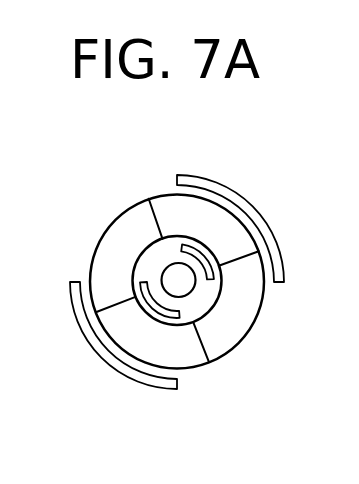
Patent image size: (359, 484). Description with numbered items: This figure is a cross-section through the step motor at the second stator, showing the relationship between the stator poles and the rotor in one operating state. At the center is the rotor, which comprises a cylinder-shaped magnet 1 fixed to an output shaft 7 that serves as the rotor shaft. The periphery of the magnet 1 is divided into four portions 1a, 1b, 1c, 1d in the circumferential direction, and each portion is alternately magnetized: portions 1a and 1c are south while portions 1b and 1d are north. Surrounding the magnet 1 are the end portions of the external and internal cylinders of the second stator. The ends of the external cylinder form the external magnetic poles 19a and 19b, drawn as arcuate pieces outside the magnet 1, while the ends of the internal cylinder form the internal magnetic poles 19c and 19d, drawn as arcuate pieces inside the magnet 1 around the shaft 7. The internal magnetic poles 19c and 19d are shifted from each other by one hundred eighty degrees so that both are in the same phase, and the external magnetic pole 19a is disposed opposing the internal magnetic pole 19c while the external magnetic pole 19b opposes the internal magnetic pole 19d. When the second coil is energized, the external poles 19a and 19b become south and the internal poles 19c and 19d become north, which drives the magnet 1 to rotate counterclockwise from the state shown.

The magnet 1 is at (224, 282).
The magnet portion 1a is at (160, 203).
The magnet portion 1b is at (107, 240).
The magnet portion 1c is at (193, 357).
The magnet portion 1d is at (257, 292).
The output shaft 7 is at (163, 274).
The external magnetic pole 19a is at (250, 205).
The external magnetic pole 19b is at (102, 360).
The internal magnetic pole 19c is at (182, 313).
The internal magnetic pole 19d is at (212, 278).